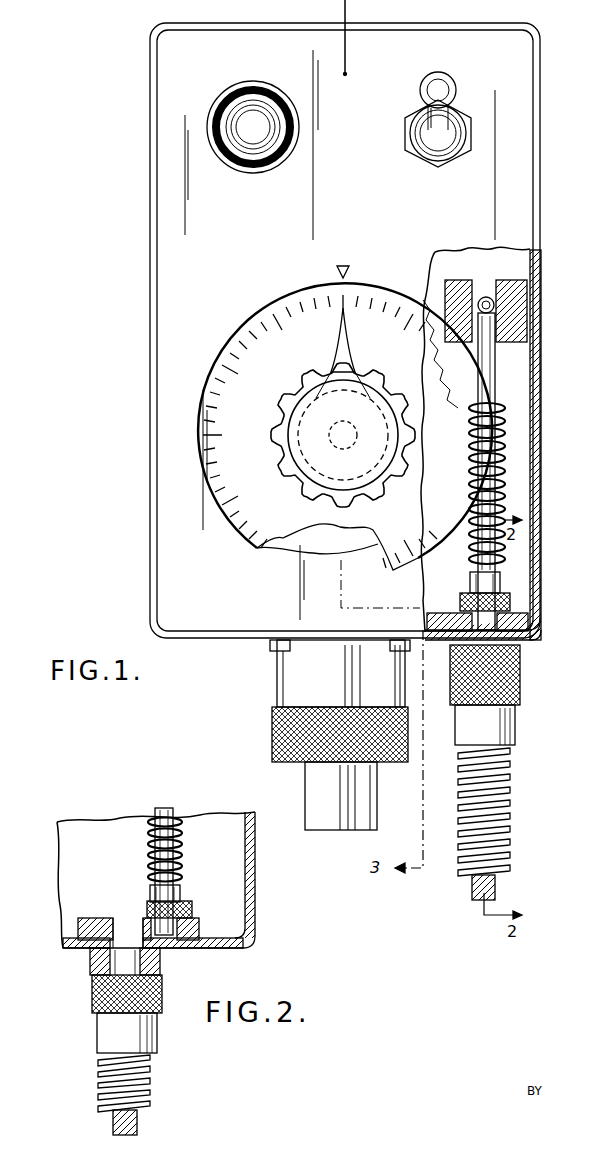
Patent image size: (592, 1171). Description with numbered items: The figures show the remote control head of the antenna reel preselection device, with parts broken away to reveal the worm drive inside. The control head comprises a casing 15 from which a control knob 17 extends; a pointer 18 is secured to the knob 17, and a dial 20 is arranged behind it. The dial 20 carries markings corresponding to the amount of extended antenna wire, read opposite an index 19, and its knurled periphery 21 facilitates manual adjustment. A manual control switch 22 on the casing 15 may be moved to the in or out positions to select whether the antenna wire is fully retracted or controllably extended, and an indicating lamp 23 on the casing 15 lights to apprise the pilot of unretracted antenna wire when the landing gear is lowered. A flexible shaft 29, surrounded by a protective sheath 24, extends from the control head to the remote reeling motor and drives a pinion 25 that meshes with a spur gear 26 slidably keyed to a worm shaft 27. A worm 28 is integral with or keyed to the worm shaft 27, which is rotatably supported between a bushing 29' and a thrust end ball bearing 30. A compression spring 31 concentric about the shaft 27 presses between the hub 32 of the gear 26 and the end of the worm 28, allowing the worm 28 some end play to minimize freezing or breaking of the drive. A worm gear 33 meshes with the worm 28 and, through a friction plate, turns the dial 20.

In FIG. 1, the casing 15 is at (492, 40).
In FIG. 1, the control knob 17 is at (307, 478).
In FIG. 1, the pointer 18 is at (345, 350).
In FIG. 1, the index 19 is at (352, 273).
In FIG. 1, the dial 20 is at (208, 406).
In FIG. 1, the periphery 21 is at (200, 447).
In FIG. 1, the manual control switch 22 is at (454, 84).
In FIG. 1, the indicating lamp 23 is at (235, 158).
In FIG. 1, the protective sheath 24 is at (507, 815).
In FIG. 2, the protective sheath 24 is at (100, 1086).
In FIG. 2, the pinion 25 is at (118, 918).
In FIG. 1, the spur gear 26 is at (512, 601).
In FIG. 2, the spur gear 26 is at (192, 908).
In FIG. 1, the worm shaft 27 is at (489, 333).
In FIG. 2, the worm shaft 27 is at (172, 812).
In FIG. 1, the worm 28 is at (506, 432).
In FIG. 1, the flexible shaft 29 is at (461, 890).
In FIG. 2, the flexible shaft 29 is at (153, 1032).
In FIG. 1, the bushing 29' is at (496, 626).
In FIG. 1, the thrust end ball bearing 30 is at (496, 306).
In FIG. 1, the compression spring 31 is at (497, 511).
In FIG. 2, the compression spring 31 is at (152, 818).
In FIG. 1, the hub 32 is at (503, 587).
In FIG. 2, the hub 32 is at (182, 897).
In FIG. 1, the worm gear 33 is at (452, 435).